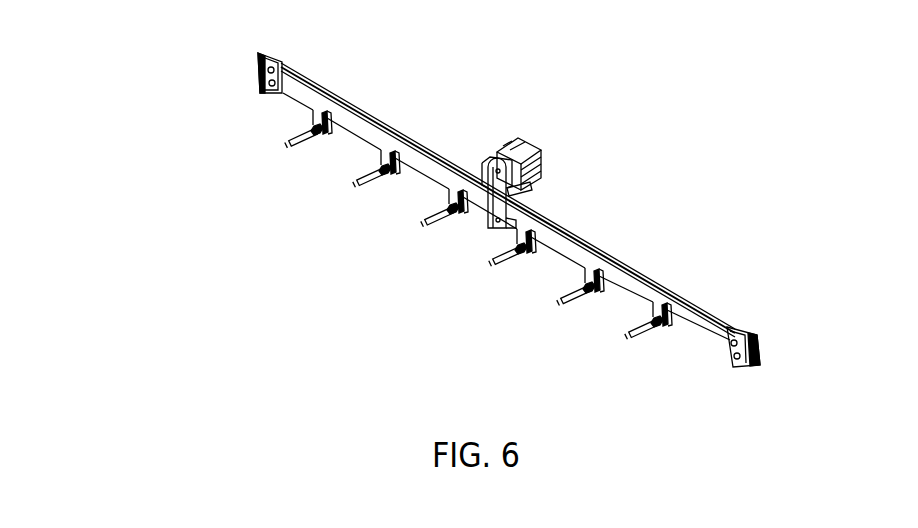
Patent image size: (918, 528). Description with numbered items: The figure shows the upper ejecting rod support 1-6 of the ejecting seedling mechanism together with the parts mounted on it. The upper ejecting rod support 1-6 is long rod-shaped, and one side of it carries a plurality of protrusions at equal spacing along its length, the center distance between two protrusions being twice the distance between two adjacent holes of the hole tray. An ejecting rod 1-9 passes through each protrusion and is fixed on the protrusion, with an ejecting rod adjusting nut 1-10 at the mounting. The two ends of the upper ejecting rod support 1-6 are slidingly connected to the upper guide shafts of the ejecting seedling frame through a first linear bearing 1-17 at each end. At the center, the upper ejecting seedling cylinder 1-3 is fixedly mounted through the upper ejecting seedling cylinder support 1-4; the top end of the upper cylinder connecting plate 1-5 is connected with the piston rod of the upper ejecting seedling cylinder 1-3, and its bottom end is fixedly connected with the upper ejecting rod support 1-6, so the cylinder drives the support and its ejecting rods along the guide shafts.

The upper ejecting seedling cylinder 1-3 is at (543, 157).
The upper ejecting seedling cylinder support 1-4 is at (493, 157).
The upper cylinder connecting plate 1-5 is at (533, 210).
The upper ejecting rod support 1-6 is at (322, 110).
The ejecting rod 1-9 is at (308, 140).
The ejecting rod adjusting nut 1-10 is at (387, 163).
The first linear bearing 1-17 is at (267, 77).